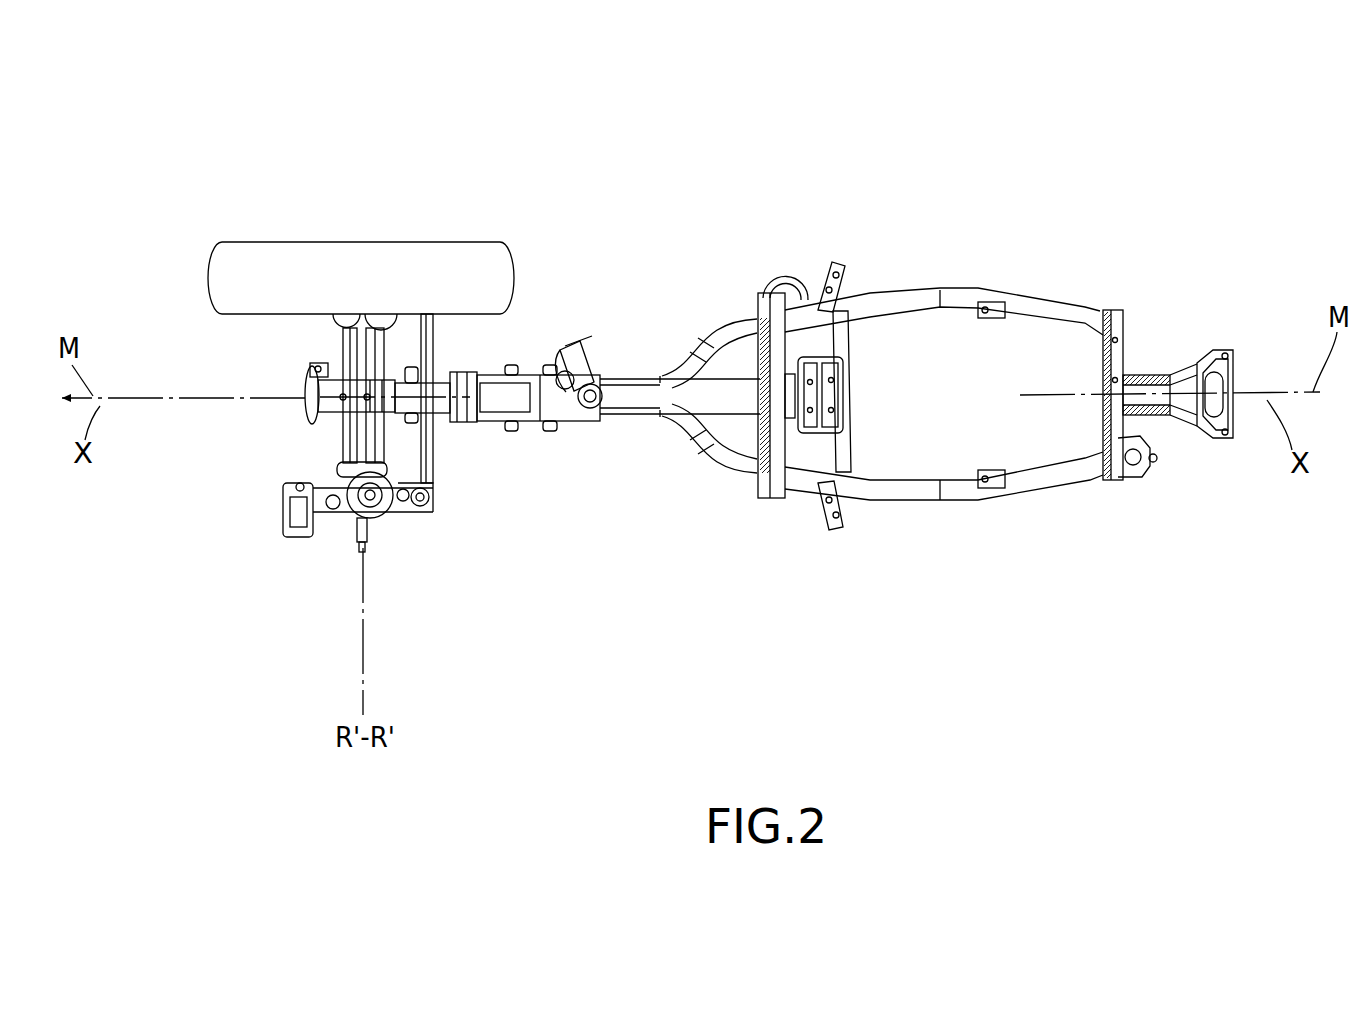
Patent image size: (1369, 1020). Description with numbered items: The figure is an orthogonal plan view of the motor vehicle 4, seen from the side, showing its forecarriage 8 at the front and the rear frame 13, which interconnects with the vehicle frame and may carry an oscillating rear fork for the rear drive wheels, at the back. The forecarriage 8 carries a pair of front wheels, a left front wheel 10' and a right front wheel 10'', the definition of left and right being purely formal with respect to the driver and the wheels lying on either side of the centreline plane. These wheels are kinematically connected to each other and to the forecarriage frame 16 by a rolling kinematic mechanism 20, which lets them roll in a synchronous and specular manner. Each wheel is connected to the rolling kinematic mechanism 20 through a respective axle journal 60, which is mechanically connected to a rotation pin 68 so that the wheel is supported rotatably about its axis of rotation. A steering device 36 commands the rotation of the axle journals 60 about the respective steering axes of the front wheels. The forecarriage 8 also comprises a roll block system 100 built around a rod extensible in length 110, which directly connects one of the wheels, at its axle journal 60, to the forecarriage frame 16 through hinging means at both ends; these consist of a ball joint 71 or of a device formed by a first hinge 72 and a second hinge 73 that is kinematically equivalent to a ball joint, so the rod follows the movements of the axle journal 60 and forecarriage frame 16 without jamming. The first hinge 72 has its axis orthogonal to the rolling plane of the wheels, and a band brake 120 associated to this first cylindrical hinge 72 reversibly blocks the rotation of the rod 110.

The motor vehicle 4 is at (737, 207).
The forecarriage 8 is at (422, 211).
The left front wheel 10' is at (196, 774).
The right front wheel 10'' is at (361, 211).
The rear frame 13 is at (1047, 300).
The forecarriage frame 16 is at (385, 401).
The rolling kinematic mechanism 20 is at (408, 343).
The steering device 36 is at (435, 453).
The axle journal 60 is at (356, 528).
The rotation pin 68 is at (376, 525).
The ball joint 71 is at (323, 483).
The first hinge 72 is at (298, 405).
The second hinge 73 is at (319, 370).
The roll block system 100 is at (239, 357).
The rod extensible in length 110 is at (303, 450).
The band brake 120 is at (291, 421).